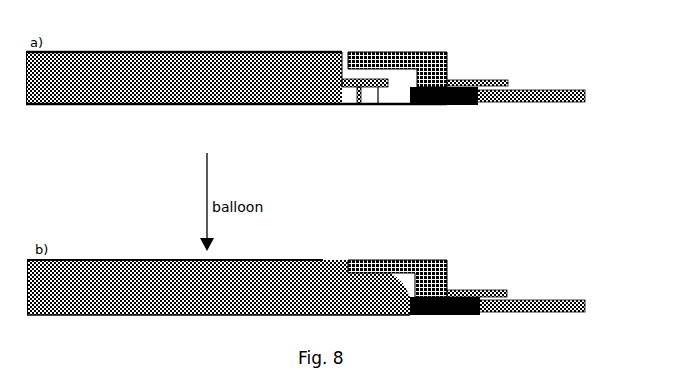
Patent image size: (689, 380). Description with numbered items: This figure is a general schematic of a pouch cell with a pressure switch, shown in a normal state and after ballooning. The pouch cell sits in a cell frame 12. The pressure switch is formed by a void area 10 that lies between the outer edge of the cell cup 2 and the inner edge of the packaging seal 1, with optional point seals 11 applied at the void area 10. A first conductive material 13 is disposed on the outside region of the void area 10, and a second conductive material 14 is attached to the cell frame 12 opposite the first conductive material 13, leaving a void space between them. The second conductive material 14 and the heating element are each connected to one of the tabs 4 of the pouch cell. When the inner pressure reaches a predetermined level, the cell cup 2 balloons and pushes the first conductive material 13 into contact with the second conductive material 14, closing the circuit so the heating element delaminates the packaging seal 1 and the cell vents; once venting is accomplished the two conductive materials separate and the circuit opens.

The packaging seal 1 is at (436, 103).
The cell cup 2 is at (275, 104).
The tab 4 is at (585, 95).
The void area 10 is at (368, 95).
The point seal 11 is at (355, 99).
The cell frame 12 is at (447, 52).
The first conductive material 13 is at (368, 81).
The second conductive material 14 is at (350, 52).